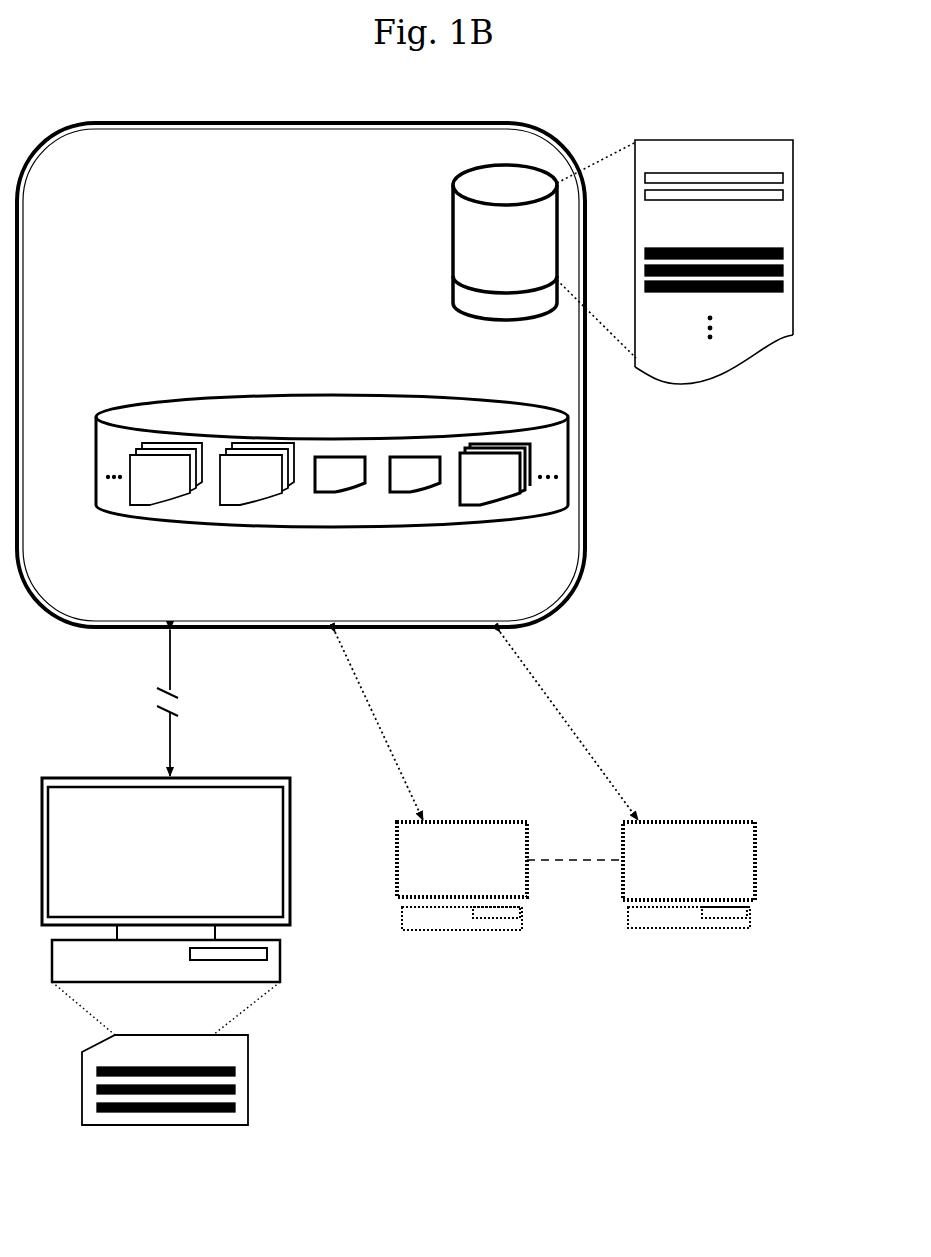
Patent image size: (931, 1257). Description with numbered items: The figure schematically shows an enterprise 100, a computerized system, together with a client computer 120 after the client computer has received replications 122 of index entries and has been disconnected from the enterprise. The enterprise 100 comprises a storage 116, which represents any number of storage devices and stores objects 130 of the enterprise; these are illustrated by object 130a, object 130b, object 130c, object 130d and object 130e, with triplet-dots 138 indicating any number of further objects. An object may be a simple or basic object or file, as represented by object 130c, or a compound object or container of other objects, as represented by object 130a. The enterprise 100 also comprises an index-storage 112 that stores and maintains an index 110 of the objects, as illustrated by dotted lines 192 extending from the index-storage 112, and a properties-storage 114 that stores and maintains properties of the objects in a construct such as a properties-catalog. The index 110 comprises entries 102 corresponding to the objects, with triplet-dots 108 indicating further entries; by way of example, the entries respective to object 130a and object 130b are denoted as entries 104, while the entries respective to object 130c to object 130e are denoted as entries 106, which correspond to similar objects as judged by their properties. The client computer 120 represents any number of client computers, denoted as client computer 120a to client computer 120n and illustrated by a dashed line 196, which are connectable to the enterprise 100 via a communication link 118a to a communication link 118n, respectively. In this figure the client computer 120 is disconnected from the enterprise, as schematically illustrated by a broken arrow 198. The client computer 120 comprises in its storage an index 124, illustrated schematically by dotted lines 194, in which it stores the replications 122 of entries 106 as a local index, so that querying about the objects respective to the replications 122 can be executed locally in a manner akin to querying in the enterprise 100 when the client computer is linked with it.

The enterprise 100 is at (128, 98).
The entries 102 is at (693, 152).
The entries 104 is at (774, 166).
The entries 106 is at (774, 238).
The triplet-dots 108 is at (708, 340).
The index 110 is at (715, 372).
The index-storage 112 is at (460, 178).
The properties-storage 114 is at (457, 296).
The storage 116 is at (163, 404).
The communication link 118a is at (397, 754).
The communication link 118n is at (593, 754).
The client computer 120 is at (96, 778).
The client computer 120a is at (468, 822).
The client computer 120n is at (693, 822).
The replications 122 is at (112, 1052).
The index 124 is at (183, 1127).
The objects 130 is at (90, 458).
The object 130a is at (150, 505).
The object 130b is at (240, 505).
The object 130c is at (337, 492).
The object 130d is at (410, 492).
The object 130e is at (490, 505).
The triplet-dots 138 is at (104, 479).
The dotted lines 192 is at (605, 158).
The dotted lines 194 is at (88, 1010).
The dashed line 196 is at (568, 858).
The broken arrow 198 is at (167, 672).